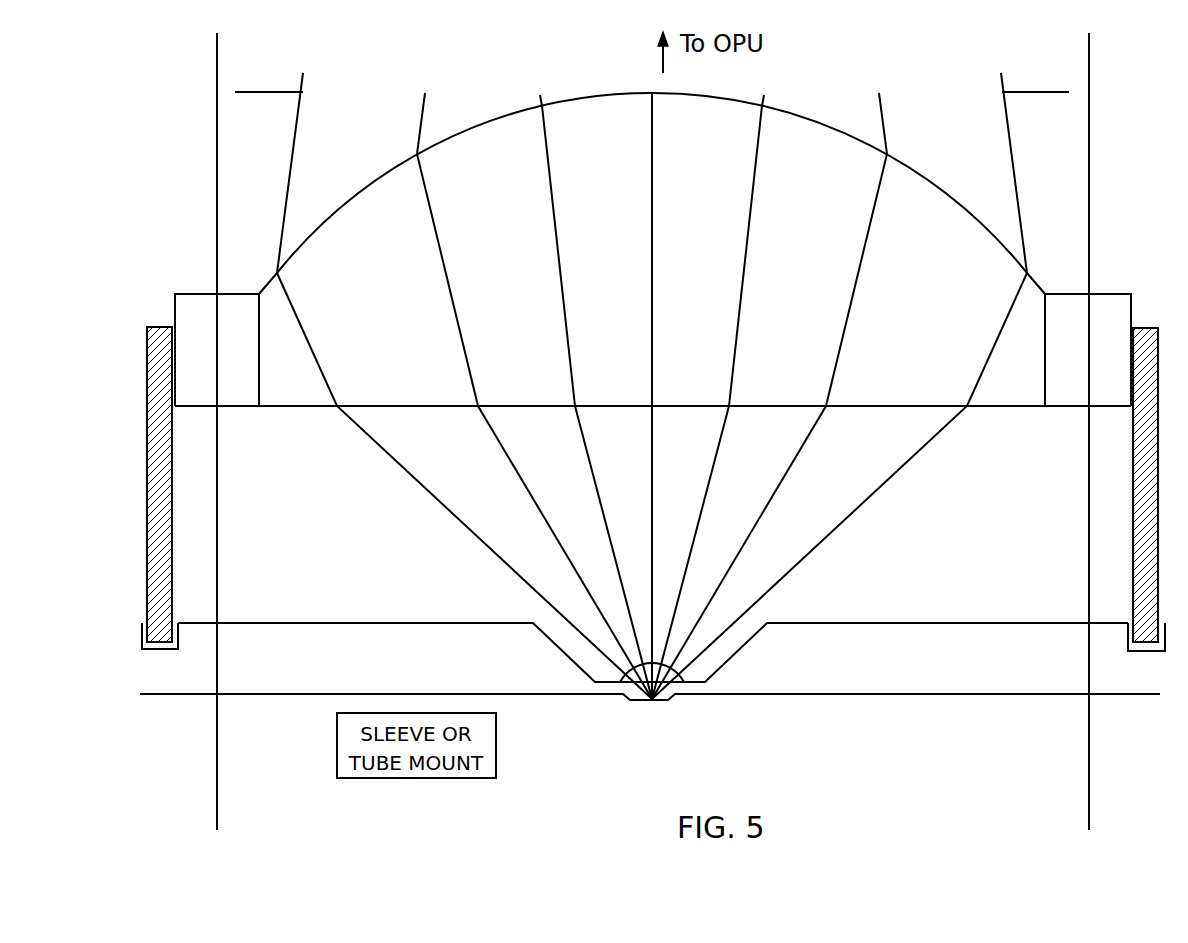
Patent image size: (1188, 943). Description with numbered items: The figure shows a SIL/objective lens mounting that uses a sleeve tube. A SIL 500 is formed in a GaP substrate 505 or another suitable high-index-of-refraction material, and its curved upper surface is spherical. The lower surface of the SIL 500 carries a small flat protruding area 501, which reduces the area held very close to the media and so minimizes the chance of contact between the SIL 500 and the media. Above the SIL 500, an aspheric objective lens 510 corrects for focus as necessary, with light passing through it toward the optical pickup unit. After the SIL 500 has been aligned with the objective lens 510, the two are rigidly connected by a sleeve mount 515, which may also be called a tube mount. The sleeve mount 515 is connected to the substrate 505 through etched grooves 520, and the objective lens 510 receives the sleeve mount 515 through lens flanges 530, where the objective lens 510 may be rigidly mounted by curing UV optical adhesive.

The SIL 500 is at (678, 675).
The small flat protruding area 501 is at (655, 703).
The GaP substrate 505 is at (968, 640).
The objective lens 510 is at (822, 142).
The sleeve mount 515 is at (1133, 524).
The etched grooves 520 is at (1147, 652).
The lens flanges 530 is at (240, 305).